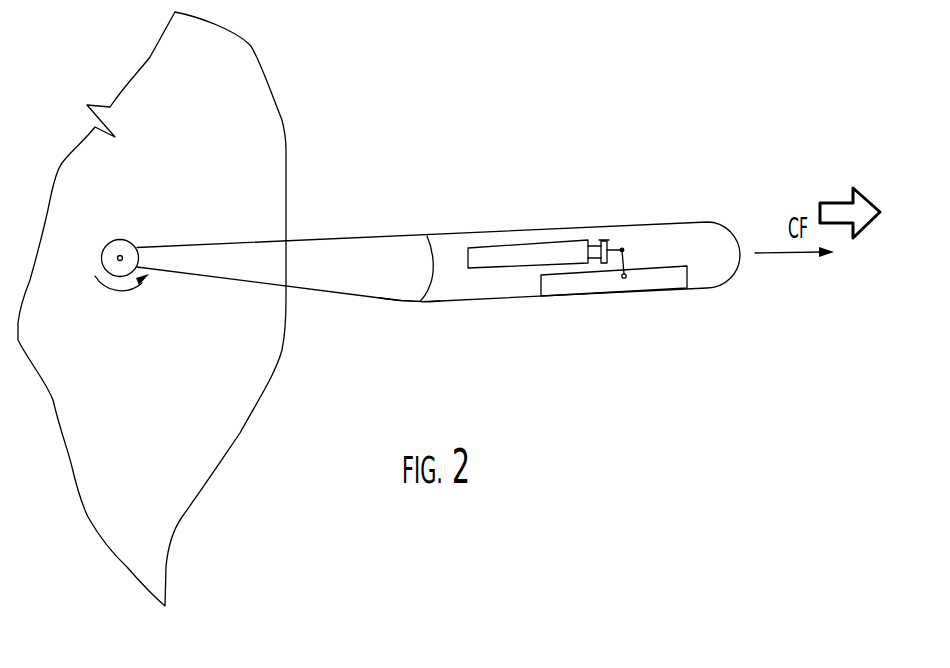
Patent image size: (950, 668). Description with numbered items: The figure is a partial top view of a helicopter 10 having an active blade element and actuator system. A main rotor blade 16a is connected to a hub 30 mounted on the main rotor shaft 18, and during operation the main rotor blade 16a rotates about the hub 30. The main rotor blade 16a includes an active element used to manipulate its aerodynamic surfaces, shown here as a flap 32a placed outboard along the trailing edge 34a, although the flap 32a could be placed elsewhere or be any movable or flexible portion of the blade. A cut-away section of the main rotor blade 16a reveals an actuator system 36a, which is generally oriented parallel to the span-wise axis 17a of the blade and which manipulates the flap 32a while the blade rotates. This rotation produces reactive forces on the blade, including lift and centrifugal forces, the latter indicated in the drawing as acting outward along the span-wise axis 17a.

The helicopter 10 is at (263, 73).
The hub 30 is at (114, 234).
The main rotor shaft 18 is at (117, 259).
The main rotor blade 16a is at (676, 235).
The actuator system 36a is at (518, 255).
The flap 32a is at (630, 287).
The trailing edge 34a is at (514, 308).
The span-wise axis 17a is at (800, 271).